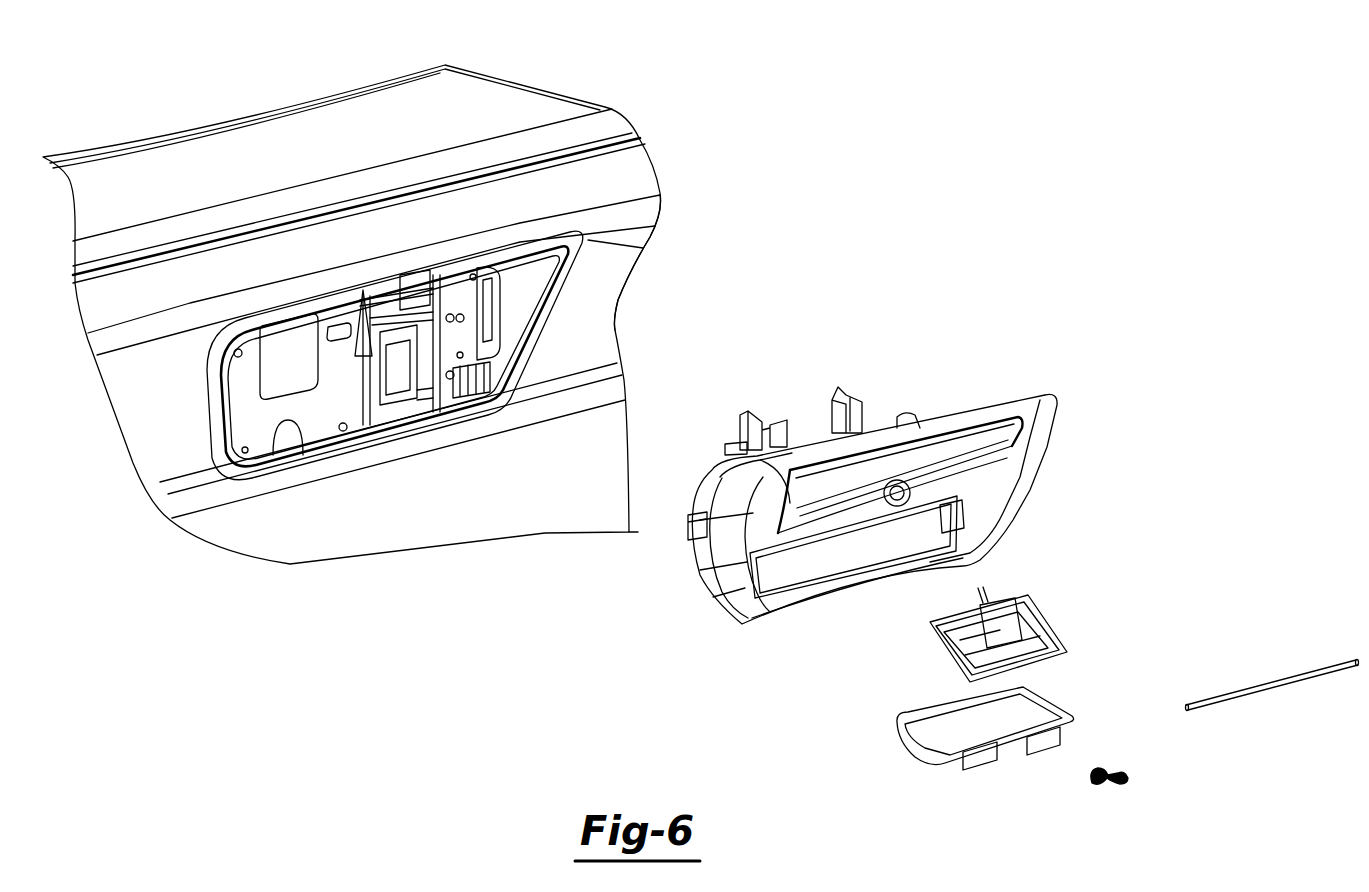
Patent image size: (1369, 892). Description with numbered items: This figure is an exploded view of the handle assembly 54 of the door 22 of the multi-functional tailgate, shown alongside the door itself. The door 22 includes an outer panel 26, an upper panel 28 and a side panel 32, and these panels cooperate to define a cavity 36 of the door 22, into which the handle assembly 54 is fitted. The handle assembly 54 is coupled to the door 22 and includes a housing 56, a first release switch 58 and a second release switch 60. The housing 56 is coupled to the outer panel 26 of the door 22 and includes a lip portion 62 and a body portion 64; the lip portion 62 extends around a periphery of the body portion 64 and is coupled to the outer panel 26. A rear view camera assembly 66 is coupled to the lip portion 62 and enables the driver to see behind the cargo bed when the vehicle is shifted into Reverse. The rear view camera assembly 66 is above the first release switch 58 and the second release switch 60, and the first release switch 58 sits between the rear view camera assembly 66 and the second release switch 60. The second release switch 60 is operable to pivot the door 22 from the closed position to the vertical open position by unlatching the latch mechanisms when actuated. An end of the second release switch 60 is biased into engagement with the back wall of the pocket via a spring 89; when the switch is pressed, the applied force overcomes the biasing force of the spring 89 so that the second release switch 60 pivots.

The door 22 is at (343, 530).
The outer panel 26 is at (471, 520).
The upper panel 28 is at (488, 107).
The side panel 32 is at (615, 307).
The cavity 36 is at (295, 401).
The handle assembly 54 is at (894, 453).
The housing 56 is at (843, 388).
The first release switch 58 is at (1050, 612).
The second release switch 60 is at (1033, 707).
The lip portion 62 is at (1000, 517).
The body portion 64 is at (688, 537).
The rear view camera assembly 66 is at (958, 458).
The spring 89 is at (1130, 780).